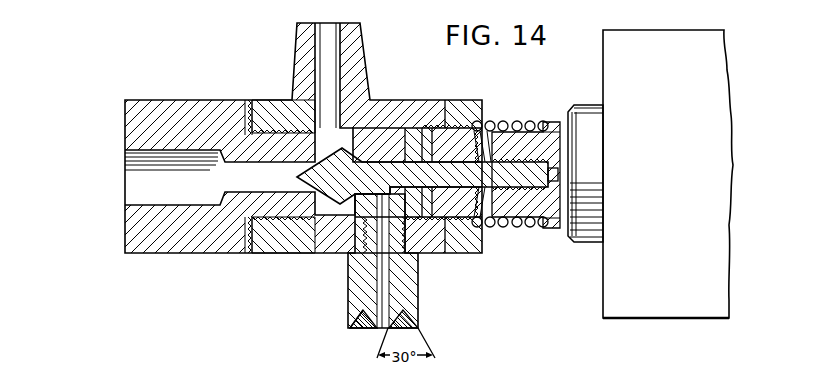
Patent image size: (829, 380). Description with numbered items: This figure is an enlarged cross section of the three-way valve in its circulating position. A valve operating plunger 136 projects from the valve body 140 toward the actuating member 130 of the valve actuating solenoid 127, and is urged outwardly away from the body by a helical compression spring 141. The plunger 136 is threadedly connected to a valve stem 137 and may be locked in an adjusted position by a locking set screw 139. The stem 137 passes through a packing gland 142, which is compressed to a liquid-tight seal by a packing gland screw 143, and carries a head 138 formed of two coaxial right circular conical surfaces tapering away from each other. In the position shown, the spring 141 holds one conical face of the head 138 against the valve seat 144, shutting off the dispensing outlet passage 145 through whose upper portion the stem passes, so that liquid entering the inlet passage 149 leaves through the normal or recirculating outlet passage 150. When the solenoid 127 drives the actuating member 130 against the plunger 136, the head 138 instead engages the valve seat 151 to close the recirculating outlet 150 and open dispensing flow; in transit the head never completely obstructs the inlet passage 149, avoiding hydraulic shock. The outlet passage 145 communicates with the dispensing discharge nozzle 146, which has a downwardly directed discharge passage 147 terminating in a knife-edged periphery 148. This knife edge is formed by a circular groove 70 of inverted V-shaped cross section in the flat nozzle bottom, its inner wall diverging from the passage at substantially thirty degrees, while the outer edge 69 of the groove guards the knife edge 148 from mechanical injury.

The valve actuating solenoid 127 is at (597, 60).
The actuating member 130 is at (593, 245).
The valve operating plunger 136 is at (555, 123).
The valve stem 137 is at (423, 128).
The valve stem head 138 is at (308, 198).
The locking set screw 139 is at (547, 230).
The valve body 140 is at (389, 100).
The helical compression spring 141 is at (504, 121).
The packing gland 142 is at (444, 128).
The packing gland screw 143 is at (459, 255).
The valve seat 144 is at (341, 205).
The dispensing outlet passage 145 is at (432, 219).
The dispensing discharge nozzle 146 is at (344, 305).
The discharge passage 147 is at (389, 287).
The knife-edged periphery 148 is at (399, 329).
The inlet passage 149 is at (343, 51).
The normal or recirculating outlet passage 150 is at (132, 205).
The valve seat 151 is at (258, 255).
The outer edge of groove 69 is at (352, 327).
The circular groove 70 is at (364, 329).